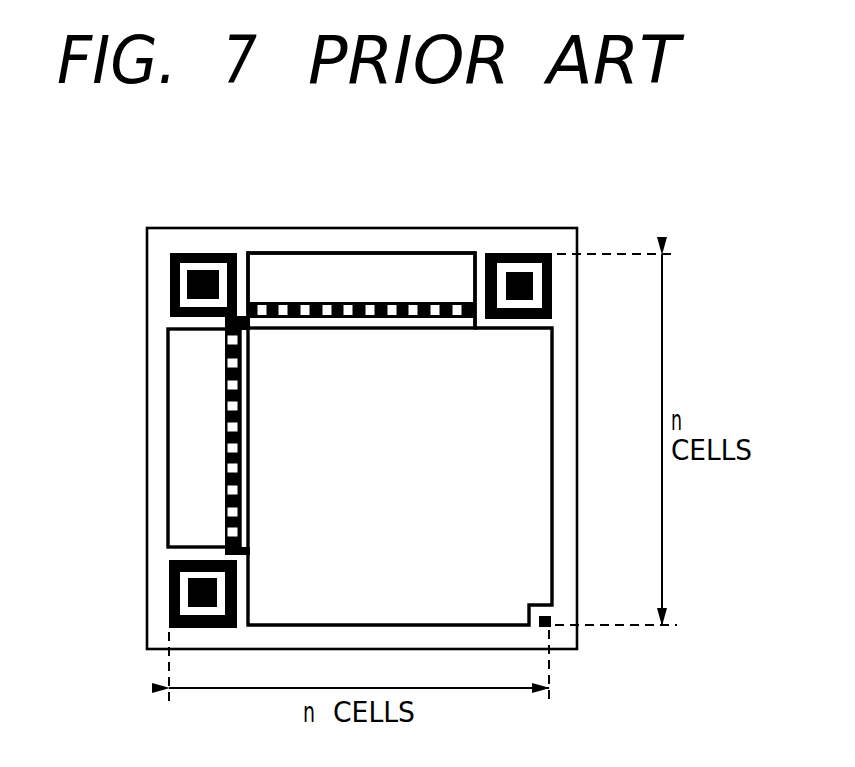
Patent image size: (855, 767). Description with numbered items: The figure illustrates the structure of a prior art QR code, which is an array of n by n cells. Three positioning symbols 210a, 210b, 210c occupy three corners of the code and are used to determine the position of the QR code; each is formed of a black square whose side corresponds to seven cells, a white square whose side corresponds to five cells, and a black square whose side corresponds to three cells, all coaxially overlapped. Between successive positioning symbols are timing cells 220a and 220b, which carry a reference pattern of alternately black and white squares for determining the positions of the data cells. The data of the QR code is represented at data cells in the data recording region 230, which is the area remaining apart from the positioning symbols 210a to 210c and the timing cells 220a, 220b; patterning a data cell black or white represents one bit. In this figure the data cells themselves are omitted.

The positioning symbol 210a is at (527, 253).
The positioning symbol 210b is at (170, 277).
The positioning symbol 210c is at (170, 572).
The timing cells 220a is at (335, 302).
The timing cells 220b is at (223, 437).
The data recording region 230 is at (432, 253).